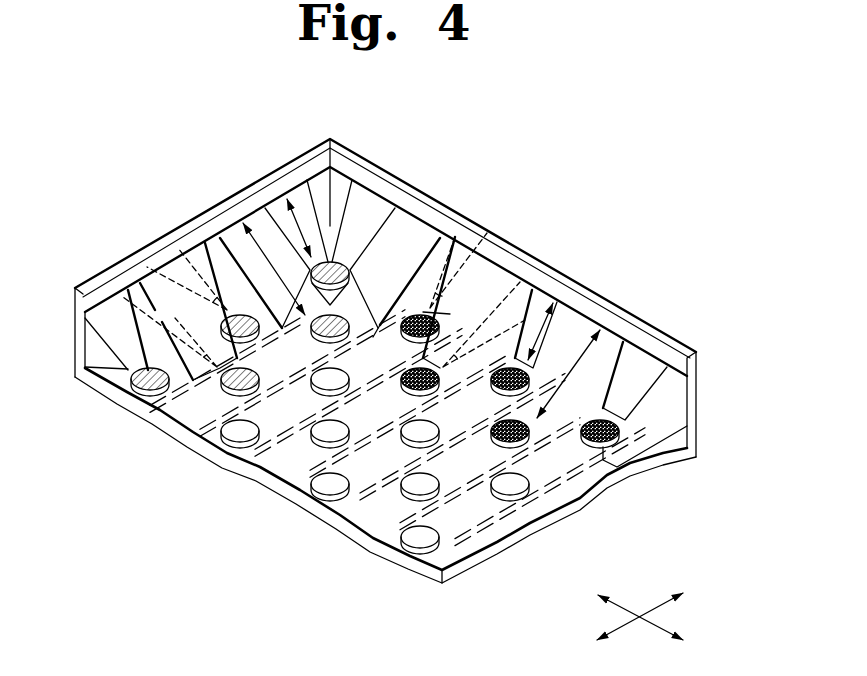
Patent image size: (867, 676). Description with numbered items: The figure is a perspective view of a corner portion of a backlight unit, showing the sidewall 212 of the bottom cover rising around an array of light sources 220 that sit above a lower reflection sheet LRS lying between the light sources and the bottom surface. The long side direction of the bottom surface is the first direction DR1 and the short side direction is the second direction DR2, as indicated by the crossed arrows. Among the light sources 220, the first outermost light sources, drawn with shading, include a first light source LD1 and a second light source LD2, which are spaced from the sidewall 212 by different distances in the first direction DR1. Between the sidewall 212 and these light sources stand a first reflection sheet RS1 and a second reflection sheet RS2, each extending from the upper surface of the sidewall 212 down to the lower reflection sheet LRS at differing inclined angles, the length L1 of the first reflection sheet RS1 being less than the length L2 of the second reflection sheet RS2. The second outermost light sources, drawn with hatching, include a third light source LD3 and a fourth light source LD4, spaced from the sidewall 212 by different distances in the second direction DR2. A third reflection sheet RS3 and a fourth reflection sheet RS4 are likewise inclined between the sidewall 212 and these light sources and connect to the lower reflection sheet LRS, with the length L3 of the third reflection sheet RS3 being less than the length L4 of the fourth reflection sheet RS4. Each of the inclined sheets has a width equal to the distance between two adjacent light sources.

The sidewall 212 is at (695, 368).
The light sources 220 is at (306, 497).
The first reflection sheet RS1 is at (636, 377).
The second reflection sheet RS2 is at (578, 338).
The third reflection sheet RS3 is at (187, 268).
The fourth reflection sheet RS4 is at (142, 292).
The first light source LD1 is at (420, 313).
The second light source LD2 is at (443, 367).
The third light source LD3 is at (232, 312).
The fourth light source LD4 is at (237, 380).
The lower reflection sheet LRS is at (240, 379).
The length of first reflection sheet L1 is at (548, 331).
The length of second reflection sheet L2 is at (568, 374).
The length of third reflection sheet L3 is at (294, 228).
The length of fourth reflection sheet L4 is at (274, 269).
The first direction DR1 is at (662, 605).
The second direction DR2 is at (619, 605).